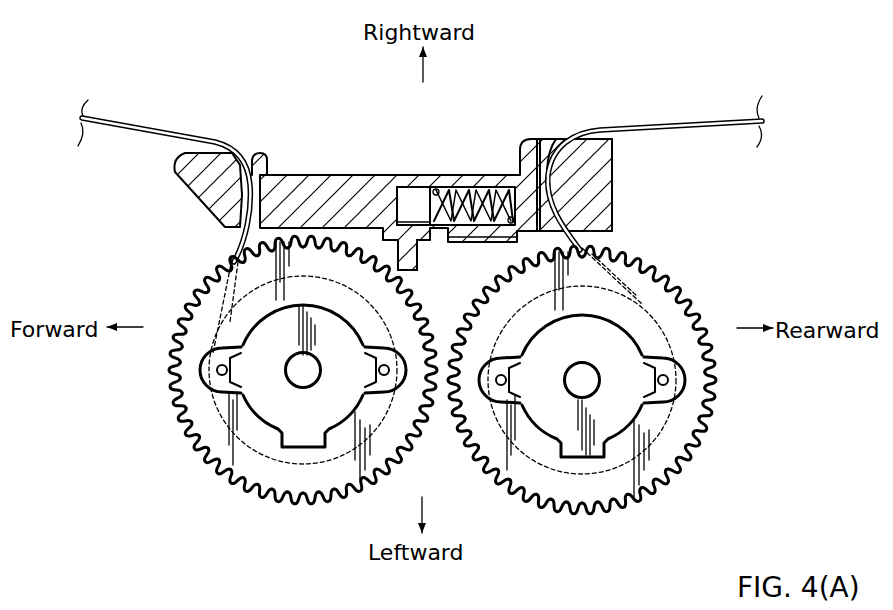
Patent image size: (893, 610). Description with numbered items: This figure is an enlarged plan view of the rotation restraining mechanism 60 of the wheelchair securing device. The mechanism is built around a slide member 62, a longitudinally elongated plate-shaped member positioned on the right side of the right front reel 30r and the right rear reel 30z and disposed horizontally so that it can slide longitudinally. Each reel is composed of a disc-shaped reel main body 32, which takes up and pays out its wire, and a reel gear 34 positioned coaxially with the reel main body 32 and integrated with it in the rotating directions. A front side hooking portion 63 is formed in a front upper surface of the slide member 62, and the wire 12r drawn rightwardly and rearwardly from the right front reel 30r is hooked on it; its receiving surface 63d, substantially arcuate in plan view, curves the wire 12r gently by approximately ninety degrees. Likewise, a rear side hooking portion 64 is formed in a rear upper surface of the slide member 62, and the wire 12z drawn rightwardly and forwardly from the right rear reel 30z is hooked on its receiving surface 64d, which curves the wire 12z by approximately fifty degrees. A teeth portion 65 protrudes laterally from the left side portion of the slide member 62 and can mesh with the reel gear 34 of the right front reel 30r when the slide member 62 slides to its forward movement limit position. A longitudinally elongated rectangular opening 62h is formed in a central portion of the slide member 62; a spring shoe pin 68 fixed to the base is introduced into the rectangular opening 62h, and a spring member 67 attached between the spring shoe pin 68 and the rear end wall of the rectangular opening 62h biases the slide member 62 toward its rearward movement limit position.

The wire 12r is at (147, 131).
The wire 12z is at (672, 122).
The right front reel 30r is at (168, 424).
The right rear reel 30z is at (668, 270).
The reel main body 32 is at (236, 443).
The reel gear 34 is at (183, 390).
The rotation restraining mechanism 60 is at (483, 92).
The slide member 62 is at (332, 173).
The rectangular opening 62h is at (483, 193).
The front side hooking portion 63 is at (203, 178).
The receiving surface 63d is at (244, 156).
The rear side hooking portion 64 is at (593, 181).
The receiving surface 64d is at (553, 157).
The teeth portion 65 is at (413, 243).
The spring member 67 is at (458, 190).
The spring shoe pin 68 is at (412, 205).